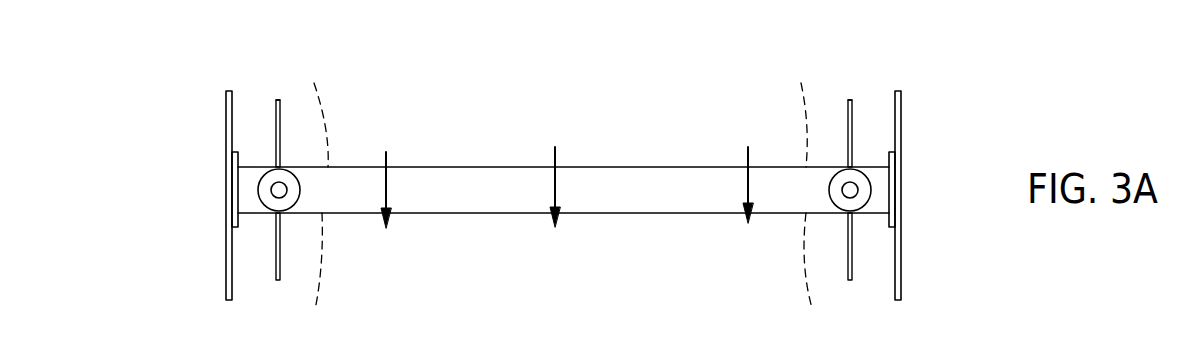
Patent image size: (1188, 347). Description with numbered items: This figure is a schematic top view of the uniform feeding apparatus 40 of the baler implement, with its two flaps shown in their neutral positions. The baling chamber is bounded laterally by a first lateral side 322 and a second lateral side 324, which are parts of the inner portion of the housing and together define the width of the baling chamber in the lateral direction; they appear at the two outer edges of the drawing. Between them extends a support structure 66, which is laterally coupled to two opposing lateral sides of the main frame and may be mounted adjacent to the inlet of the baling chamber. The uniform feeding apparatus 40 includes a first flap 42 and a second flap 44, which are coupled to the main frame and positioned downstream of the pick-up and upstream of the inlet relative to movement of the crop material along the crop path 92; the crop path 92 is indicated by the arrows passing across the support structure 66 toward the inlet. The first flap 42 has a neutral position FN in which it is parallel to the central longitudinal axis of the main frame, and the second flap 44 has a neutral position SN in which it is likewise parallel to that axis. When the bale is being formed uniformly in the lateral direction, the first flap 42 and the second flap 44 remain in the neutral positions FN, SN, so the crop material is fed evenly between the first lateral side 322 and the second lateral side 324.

The uniform feeding apparatus 40 is at (288, 90).
The first flap 42 is at (261, 161).
The second flap 44 is at (877, 161).
The support structure 66 is at (475, 202).
The crop path 92 is at (557, 193).
The first lateral side 322 is at (227, 263).
The second lateral side 324 is at (901, 263).
The neutral position of the first flap FN is at (304, 252).
The neutral position of the second flap SN is at (819, 258).